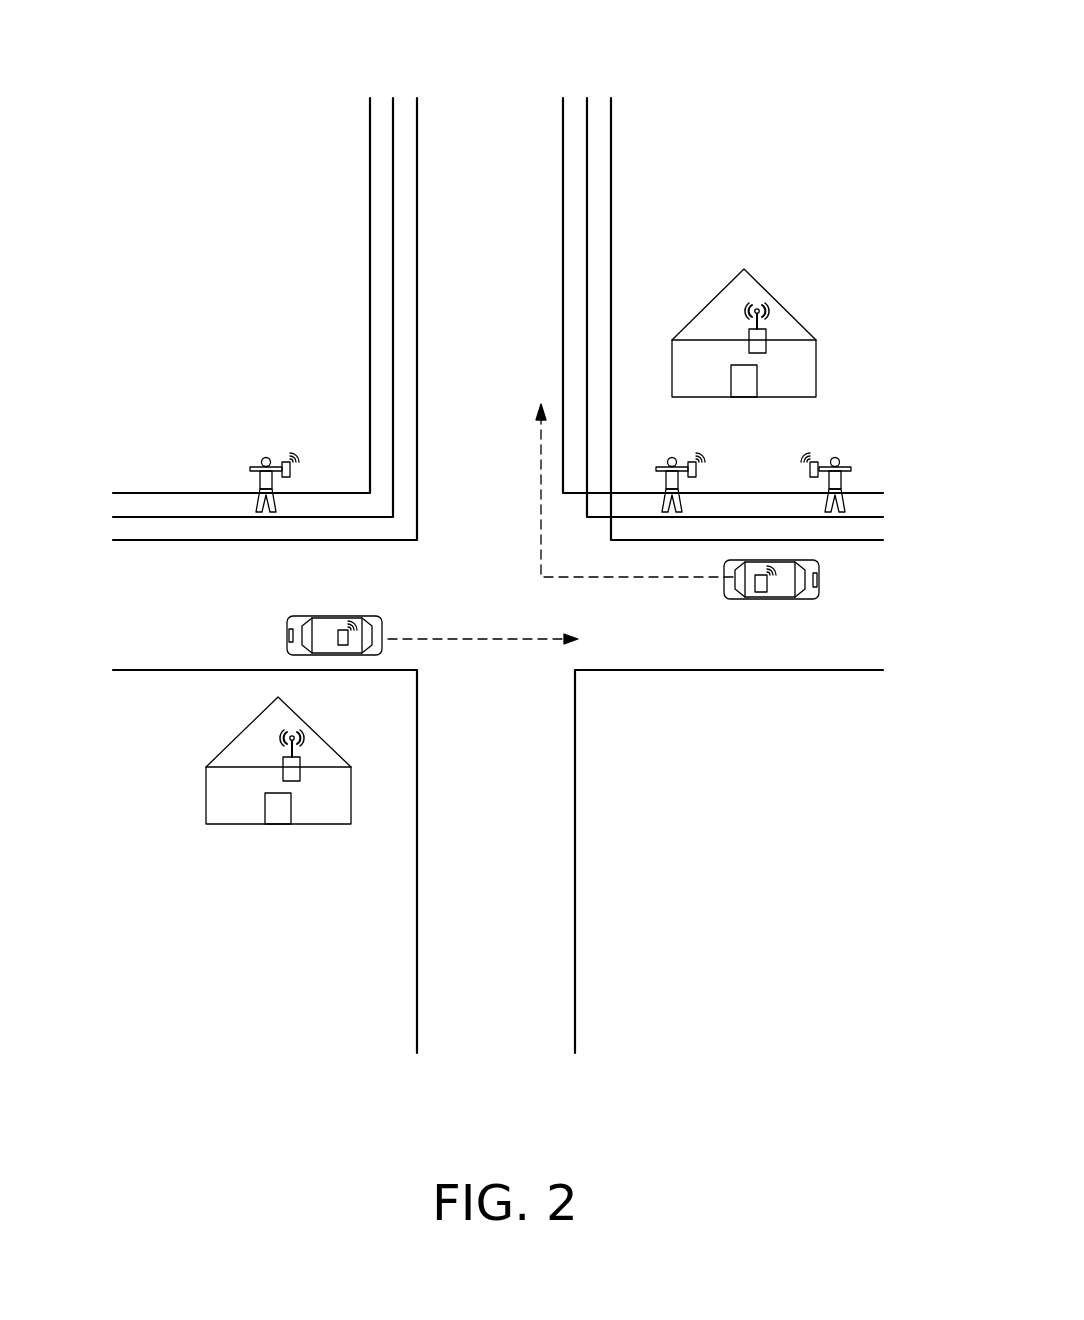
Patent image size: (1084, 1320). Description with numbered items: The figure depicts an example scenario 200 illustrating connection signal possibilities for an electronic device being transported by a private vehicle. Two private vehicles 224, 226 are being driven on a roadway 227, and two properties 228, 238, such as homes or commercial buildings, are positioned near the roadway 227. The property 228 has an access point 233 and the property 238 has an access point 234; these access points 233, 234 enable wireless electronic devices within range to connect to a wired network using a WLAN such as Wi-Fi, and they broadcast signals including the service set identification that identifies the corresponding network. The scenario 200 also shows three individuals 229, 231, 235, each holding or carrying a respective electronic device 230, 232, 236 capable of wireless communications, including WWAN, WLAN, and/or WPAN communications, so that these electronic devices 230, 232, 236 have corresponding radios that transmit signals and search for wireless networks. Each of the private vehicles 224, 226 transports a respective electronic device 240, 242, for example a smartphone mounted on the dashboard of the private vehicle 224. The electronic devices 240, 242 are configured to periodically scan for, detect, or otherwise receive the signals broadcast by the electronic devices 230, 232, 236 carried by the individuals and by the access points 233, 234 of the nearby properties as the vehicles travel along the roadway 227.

The scenario 200 is at (800, 50).
The private vehicle 224 is at (335, 617).
The private vehicle 226 is at (773, 602).
The roadway 227 is at (632, 652).
The property 228 is at (727, 310).
The individual 229 is at (838, 457).
The electronic device 230 is at (808, 470).
The individual 231 is at (669, 457).
The electronic device 232 is at (700, 469).
The access point 233 is at (760, 340).
The access point 234 is at (295, 767).
The individual 235 is at (264, 457).
The electronic device 236 is at (292, 470).
The property 238 is at (261, 737).
The electronic device 240 is at (338, 636).
The electronic device 242 is at (767, 584).